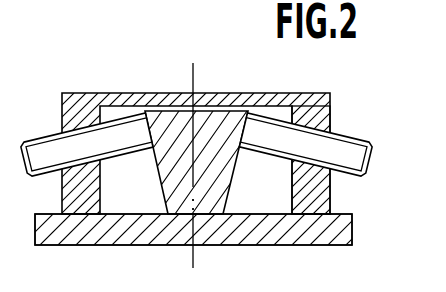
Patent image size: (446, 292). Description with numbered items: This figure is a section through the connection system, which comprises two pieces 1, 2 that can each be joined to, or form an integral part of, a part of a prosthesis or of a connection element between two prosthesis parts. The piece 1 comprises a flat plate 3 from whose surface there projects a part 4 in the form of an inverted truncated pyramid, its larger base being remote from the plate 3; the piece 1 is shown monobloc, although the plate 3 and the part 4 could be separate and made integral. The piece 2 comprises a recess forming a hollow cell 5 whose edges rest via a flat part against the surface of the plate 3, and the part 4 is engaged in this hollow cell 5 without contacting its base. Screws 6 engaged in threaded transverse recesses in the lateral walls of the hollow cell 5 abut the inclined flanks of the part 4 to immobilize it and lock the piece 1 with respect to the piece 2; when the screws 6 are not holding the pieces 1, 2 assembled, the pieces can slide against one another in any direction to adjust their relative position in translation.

The piece 1 is at (251, 248).
The piece 2 is at (246, 91).
The flat plate 3 is at (106, 229).
The part 4 is at (222, 177).
The hollow cell 5 is at (331, 192).
The screws 6 is at (50, 158).